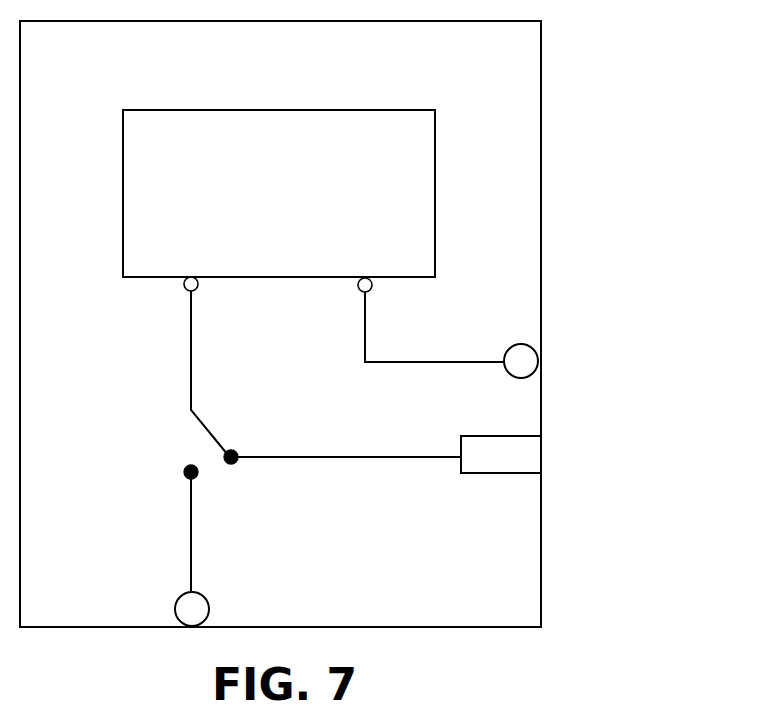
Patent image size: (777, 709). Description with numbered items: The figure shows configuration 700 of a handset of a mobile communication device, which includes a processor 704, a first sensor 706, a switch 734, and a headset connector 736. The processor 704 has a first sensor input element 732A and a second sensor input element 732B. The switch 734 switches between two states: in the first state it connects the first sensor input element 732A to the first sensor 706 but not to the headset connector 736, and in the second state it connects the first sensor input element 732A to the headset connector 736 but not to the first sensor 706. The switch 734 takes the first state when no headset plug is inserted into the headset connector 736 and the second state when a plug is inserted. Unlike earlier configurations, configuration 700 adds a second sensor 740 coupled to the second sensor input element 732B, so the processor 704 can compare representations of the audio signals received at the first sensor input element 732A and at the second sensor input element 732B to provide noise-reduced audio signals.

The configuration 700 is at (668, 64).
The processor 704 is at (435, 148).
The first sensor 706 is at (207, 600).
The first sensor input element 732A is at (184, 286).
The second sensor input element 732B is at (358, 287).
The switch 734 is at (210, 432).
The headset connector 736 is at (510, 474).
The second sensor 740 is at (507, 372).